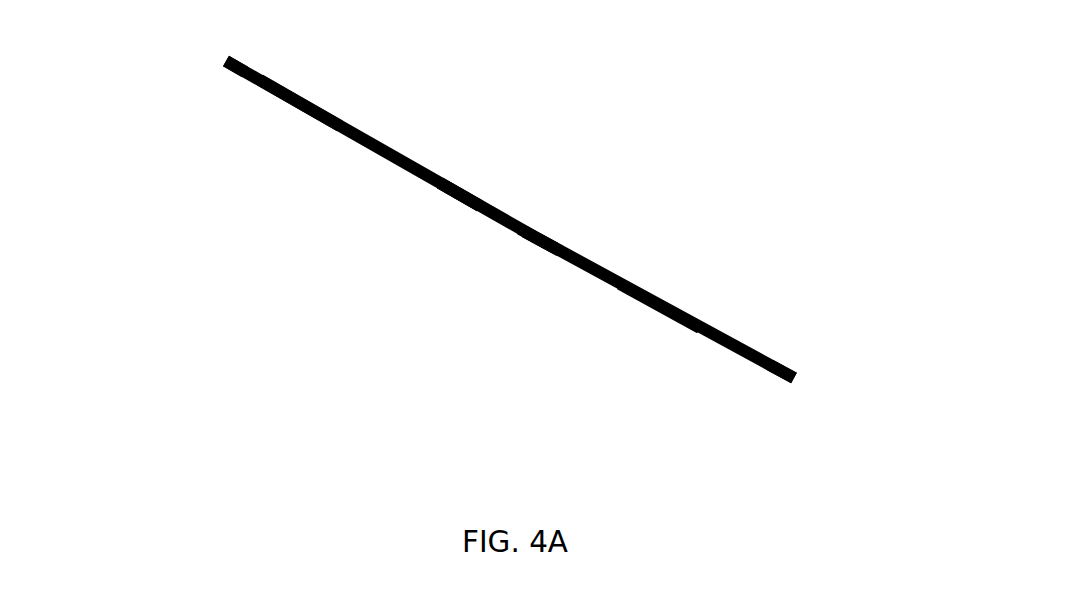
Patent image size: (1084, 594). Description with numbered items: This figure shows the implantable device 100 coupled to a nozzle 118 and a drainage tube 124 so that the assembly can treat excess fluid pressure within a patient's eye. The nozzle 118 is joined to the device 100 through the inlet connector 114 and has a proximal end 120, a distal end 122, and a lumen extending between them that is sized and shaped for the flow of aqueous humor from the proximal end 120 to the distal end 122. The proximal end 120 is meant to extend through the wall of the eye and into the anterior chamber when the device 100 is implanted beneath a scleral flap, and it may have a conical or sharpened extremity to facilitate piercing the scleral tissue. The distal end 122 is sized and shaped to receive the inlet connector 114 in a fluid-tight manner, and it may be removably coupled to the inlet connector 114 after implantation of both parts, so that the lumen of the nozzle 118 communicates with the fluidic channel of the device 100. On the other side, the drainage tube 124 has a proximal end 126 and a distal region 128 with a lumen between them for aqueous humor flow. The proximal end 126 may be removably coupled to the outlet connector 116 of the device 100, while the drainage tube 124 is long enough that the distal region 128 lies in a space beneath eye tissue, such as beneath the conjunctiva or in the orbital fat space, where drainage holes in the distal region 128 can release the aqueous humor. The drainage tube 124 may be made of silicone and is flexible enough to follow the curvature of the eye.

The implantable device 100 is at (513, 216).
The inlet connector 114 is at (461, 195).
The outlet connector 116 is at (541, 232).
The nozzle 118 is at (300, 107).
The proximal end 120 is at (230, 57).
The distal end 122 is at (463, 191).
The drainage tube 124 is at (660, 301).
The proximal end 126 is at (547, 238).
The distal region 128 is at (794, 370).